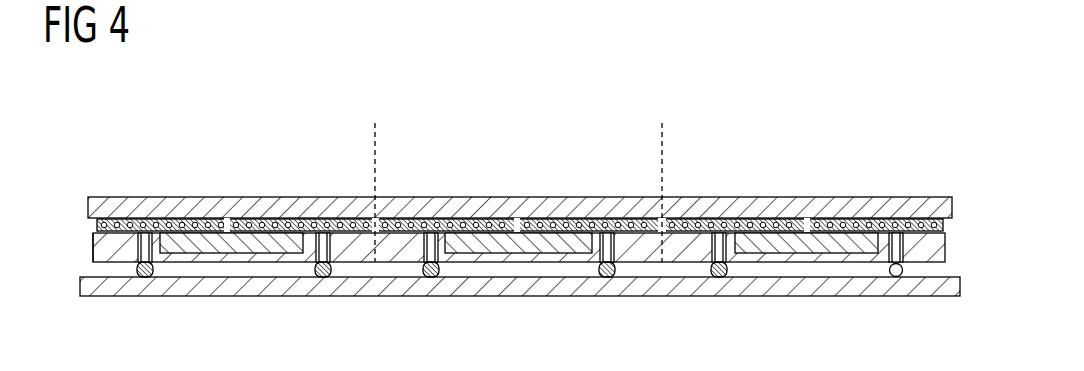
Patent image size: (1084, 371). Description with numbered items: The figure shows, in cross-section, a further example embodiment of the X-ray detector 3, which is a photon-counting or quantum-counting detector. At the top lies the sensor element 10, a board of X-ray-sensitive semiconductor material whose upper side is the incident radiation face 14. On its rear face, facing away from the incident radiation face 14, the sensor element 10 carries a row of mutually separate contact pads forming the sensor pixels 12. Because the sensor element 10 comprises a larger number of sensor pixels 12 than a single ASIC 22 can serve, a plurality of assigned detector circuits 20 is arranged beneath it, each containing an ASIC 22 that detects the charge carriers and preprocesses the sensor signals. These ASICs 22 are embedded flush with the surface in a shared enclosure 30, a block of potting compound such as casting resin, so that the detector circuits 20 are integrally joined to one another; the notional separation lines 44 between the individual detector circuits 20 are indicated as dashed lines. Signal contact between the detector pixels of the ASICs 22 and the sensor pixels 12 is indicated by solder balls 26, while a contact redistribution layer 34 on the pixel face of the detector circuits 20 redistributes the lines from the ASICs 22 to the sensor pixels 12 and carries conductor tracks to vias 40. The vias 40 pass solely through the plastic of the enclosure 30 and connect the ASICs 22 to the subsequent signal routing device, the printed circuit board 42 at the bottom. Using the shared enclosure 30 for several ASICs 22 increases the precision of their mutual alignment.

The X-ray detector 3 is at (718, 88).
The sensor element 10 is at (566, 197).
The sensor pixels 12 is at (204, 214).
The incident radiation face 14 is at (544, 114).
The detector circuit 20 is at (196, 267).
The ASIC 22 is at (250, 248).
The solder balls 26 is at (230, 222).
The enclosure 30 is at (113, 253).
The contact redistribution layer 34 is at (93, 240).
The vias 40 is at (146, 274).
The printed circuit board 42 is at (386, 290).
The separation lines 44 is at (375, 132).